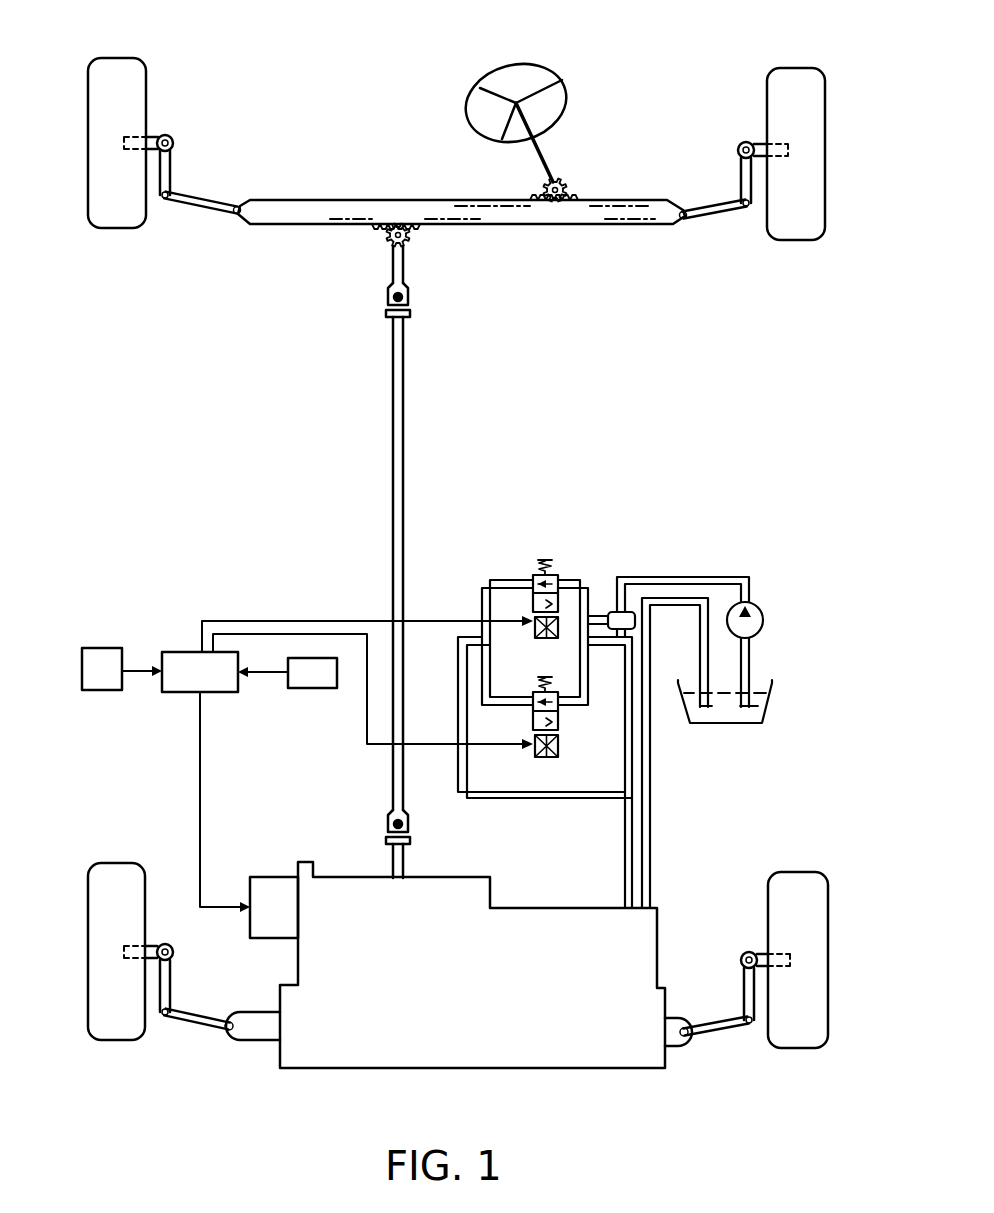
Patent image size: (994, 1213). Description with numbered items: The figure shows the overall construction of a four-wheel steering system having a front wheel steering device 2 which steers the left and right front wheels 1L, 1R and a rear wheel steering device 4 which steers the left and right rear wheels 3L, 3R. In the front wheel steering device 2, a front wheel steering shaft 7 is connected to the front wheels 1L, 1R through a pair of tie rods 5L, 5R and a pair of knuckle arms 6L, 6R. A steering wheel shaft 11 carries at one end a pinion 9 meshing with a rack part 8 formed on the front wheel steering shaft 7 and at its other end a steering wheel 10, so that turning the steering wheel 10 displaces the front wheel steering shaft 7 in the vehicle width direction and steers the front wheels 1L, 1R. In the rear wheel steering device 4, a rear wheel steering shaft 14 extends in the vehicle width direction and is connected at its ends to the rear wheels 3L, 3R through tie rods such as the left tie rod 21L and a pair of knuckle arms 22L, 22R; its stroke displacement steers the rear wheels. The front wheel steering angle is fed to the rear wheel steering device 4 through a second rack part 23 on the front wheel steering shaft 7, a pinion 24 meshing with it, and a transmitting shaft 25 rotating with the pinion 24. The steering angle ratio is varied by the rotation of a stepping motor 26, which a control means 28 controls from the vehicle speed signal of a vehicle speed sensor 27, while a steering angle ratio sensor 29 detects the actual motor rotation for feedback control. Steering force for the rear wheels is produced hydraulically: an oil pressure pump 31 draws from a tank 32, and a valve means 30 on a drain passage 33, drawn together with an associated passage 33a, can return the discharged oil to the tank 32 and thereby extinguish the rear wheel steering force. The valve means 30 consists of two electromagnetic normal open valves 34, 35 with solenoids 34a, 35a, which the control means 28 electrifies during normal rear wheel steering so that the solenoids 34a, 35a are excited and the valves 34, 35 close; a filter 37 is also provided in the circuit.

The left front wheel 1L is at (148, 84).
The right front wheel 1R is at (795, 68).
The front wheel steering device 2 is at (484, 183).
The left rear wheel 3L is at (126, 864).
The right rear wheel 3R is at (798, 872).
The rear wheel steering device 4 is at (307, 714).
The left front tie rod 5L is at (221, 204).
The right front tie rod 5R is at (698, 203).
The left front knuckle arm 6L is at (174, 165).
The right front knuckle arm 6R is at (738, 162).
The front wheel steering shaft 7 is at (420, 199).
The rack part 8 is at (533, 200).
The pinion 9 is at (571, 190).
The steering wheel 10 is at (566, 92).
The steering wheel shaft 11 is at (546, 158).
The rear wheel steering shaft 14 is at (248, 1045).
The left rear tie rod 21L is at (186, 1030).
The left rear knuckle arm 22L is at (173, 985).
The right rear knuckle arm 22R is at (742, 983).
The rack part 23 is at (378, 226).
The pinion 24 is at (410, 240).
The transmitting shaft 25 is at (392, 452).
The stepping motor 26 is at (299, 924).
The vehicle speed sensor 27 is at (101, 648).
The control means 28 is at (178, 652).
The steering angle ratio sensor 29 is at (314, 688).
The valve means 30 is at (638, 694).
The oil pressure pump 31 is at (765, 618).
The tank 32 is at (768, 712).
The drain passage 33 is at (478, 584).
The second hydraulic circuit 33a is at (477, 705).
The electromagnetic normal open valve 34 is at (561, 575).
The solenoid 34a is at (531, 632).
The electromagnetic normal open valve 35 is at (560, 722).
The solenoid 35a is at (560, 755).
The filter 37 is at (611, 612).